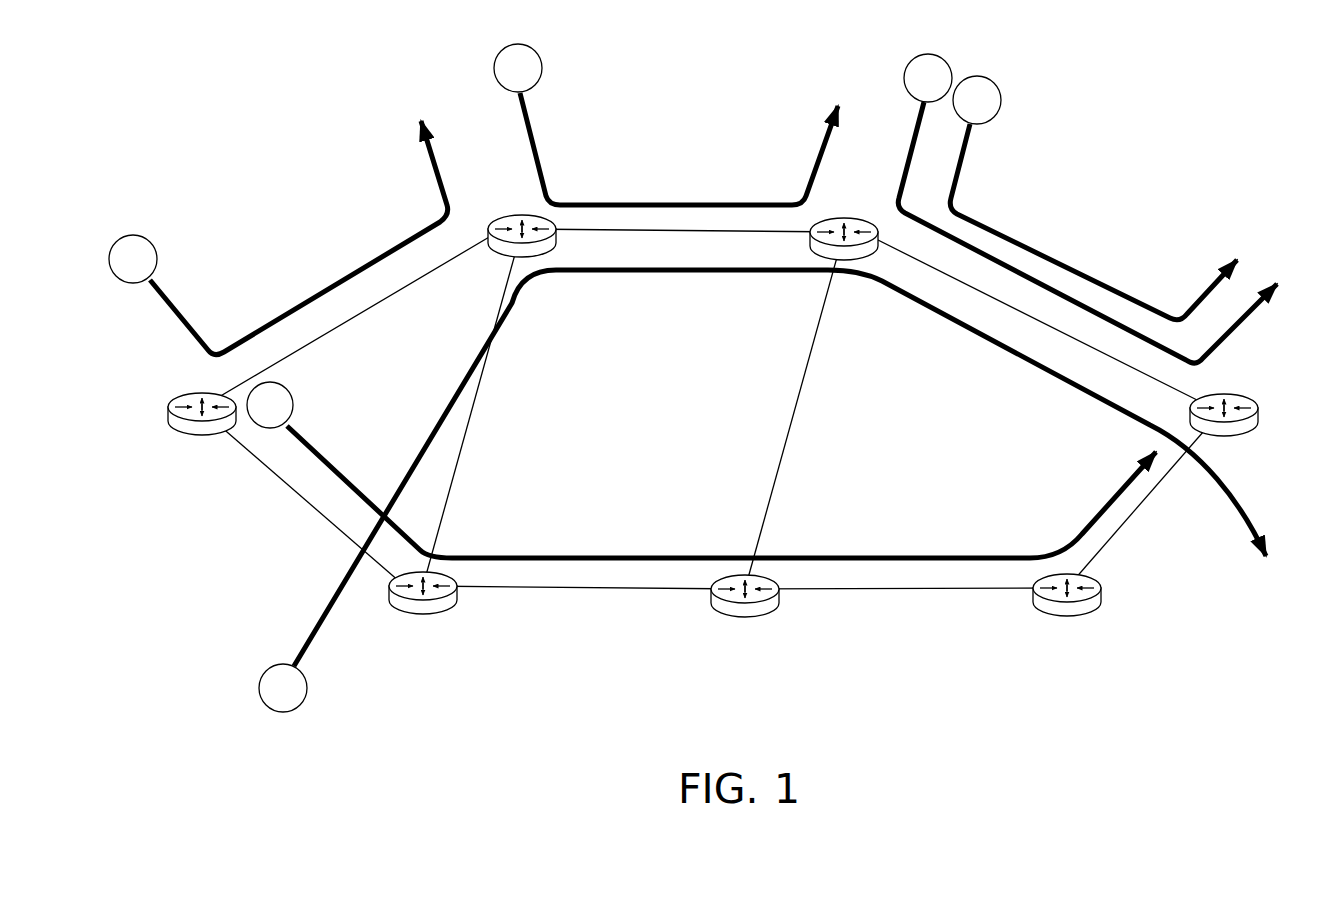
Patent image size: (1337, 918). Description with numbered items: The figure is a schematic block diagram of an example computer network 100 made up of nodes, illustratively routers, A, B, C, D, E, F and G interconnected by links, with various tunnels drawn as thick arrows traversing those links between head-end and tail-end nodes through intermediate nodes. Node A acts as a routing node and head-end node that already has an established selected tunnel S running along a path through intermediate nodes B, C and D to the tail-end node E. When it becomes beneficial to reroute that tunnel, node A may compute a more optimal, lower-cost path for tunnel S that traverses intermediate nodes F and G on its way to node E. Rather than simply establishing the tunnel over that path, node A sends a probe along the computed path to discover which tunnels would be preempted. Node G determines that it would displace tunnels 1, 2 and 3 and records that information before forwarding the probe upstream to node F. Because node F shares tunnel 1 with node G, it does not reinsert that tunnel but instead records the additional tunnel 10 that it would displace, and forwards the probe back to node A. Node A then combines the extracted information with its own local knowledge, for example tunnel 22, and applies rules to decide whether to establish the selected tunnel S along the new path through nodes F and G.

The computer network 100 is at (280, 108).
The tunnel 1 is at (283, 688).
The tunnel 2 is at (928, 78).
The tunnel 3 is at (977, 100).
The tunnel 10 is at (518, 68).
The tunnel 22 is at (133, 259).
The selected tunnel S is at (270, 405).
The node A is at (192, 430).
The node B is at (438, 612).
The node C is at (758, 616).
The node D is at (1076, 615).
The node E is at (1232, 435).
The node F is at (513, 217).
The node G is at (847, 218).